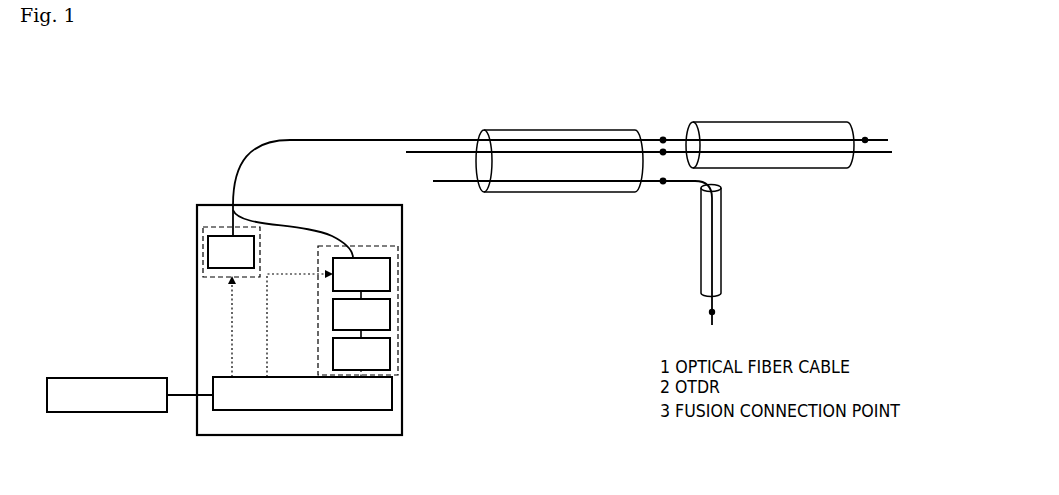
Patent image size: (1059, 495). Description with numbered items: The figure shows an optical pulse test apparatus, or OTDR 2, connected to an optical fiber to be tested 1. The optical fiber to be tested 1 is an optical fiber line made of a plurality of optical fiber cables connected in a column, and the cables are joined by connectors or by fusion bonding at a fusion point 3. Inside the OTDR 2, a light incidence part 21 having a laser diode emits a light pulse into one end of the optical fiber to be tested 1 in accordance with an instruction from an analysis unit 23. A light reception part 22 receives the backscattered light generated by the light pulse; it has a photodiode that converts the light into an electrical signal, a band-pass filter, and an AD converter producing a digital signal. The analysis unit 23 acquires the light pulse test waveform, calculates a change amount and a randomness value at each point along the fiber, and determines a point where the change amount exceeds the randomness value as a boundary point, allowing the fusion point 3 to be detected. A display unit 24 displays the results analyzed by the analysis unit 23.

The optical fiber to be tested 1 is at (493, 130).
The optical pulse test apparatus (OTDR) 2 is at (317, 205).
The fusion point 3 is at (667, 137).
The light incidence part 21 is at (203, 245).
The light reception part 22 is at (365, 246).
The analysis unit 23 is at (255, 410).
The display unit 24 is at (100, 378).